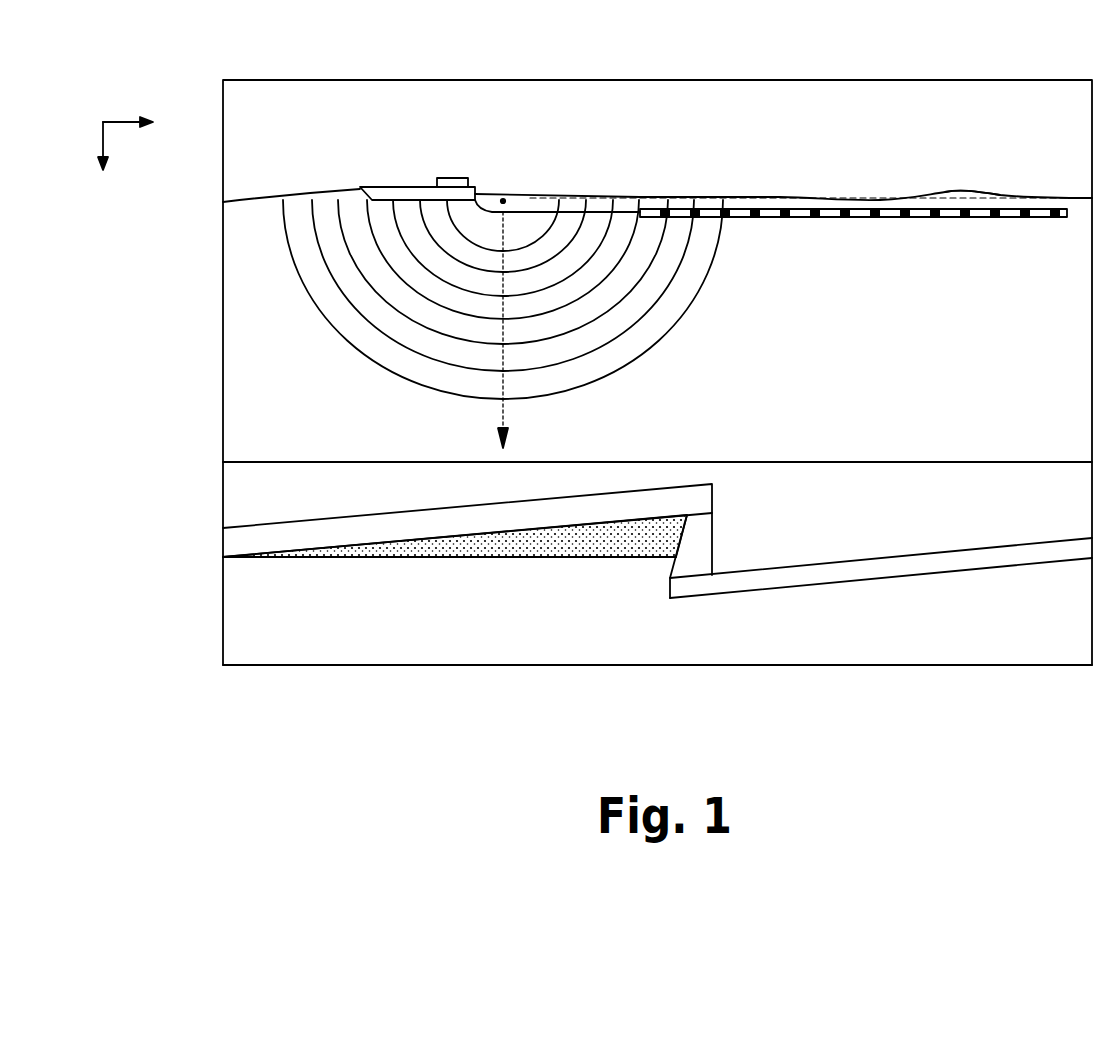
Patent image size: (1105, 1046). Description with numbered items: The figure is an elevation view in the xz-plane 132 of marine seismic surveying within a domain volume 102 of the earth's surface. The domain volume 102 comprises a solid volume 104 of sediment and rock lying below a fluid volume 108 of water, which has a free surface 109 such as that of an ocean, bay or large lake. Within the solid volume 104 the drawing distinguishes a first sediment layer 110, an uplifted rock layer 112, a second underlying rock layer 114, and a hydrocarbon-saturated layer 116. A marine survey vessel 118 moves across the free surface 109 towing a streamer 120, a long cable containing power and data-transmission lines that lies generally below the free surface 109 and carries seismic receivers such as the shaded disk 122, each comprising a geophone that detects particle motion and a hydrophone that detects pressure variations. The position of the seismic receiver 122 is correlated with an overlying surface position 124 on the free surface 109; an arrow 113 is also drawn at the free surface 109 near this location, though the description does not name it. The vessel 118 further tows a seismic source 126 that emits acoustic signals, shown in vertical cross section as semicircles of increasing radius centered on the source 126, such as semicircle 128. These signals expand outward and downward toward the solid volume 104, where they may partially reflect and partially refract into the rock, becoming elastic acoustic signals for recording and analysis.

The domain volume 102 is at (138, 280).
The solid volume 104 is at (287, 462).
The fluid volume 108 is at (243, 354).
The free surface 109 is at (795, 197).
The first sediment layer 110 is at (243, 480).
The uplifted rock layer 112 is at (243, 545).
The surface wave 113 is at (941, 200).
The second underlying rock layer 114 is at (360, 652).
The hydrocarbon-saturated layer 116 is at (448, 557).
The marine survey vessel 118 is at (410, 187).
The streamer 120 is at (846, 230).
The seismic receiver 122 is at (985, 218).
The surface position 124 is at (985, 192).
The seismic source 126 is at (504, 200).
The semicircle 128 is at (690, 313).
The xz-plane 132 is at (103, 122).